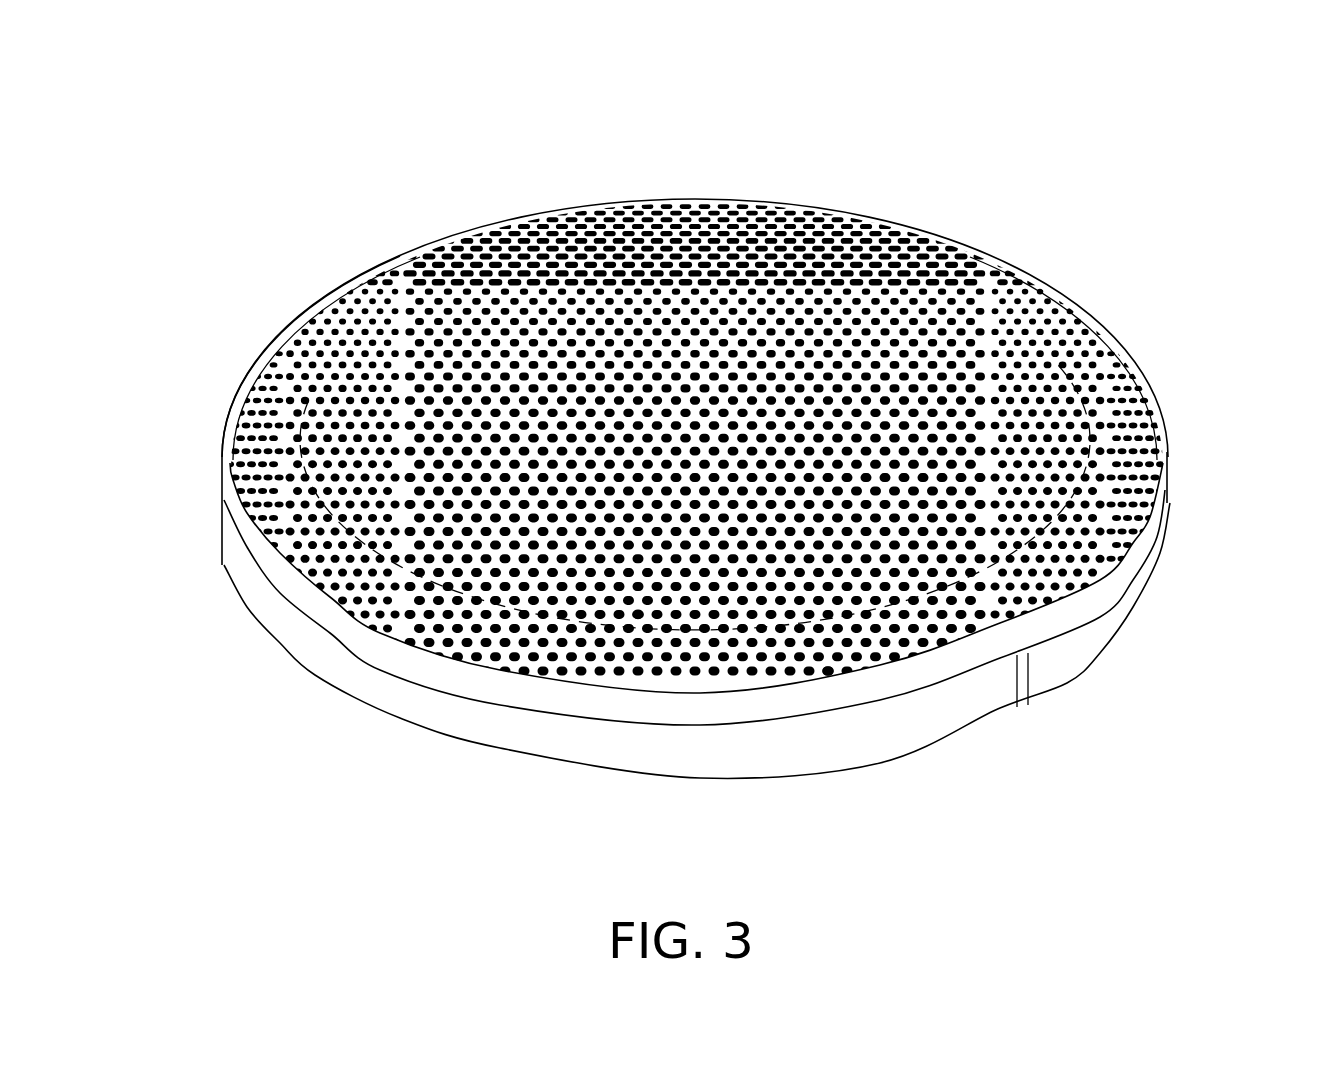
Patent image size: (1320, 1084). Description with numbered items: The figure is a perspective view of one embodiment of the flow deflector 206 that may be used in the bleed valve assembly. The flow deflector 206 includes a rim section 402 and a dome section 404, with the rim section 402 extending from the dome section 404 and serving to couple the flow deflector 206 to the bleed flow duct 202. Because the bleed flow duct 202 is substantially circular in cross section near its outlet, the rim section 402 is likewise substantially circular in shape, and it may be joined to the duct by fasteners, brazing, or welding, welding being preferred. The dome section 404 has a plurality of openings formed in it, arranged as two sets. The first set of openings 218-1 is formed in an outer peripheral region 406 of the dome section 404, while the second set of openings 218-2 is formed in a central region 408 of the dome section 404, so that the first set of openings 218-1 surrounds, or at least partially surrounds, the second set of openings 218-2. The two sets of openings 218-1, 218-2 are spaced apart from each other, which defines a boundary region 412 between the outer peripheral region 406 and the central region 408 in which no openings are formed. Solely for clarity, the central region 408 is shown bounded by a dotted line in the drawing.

The flow deflector 206 is at (985, 128).
The bleed flow duct 202 is at (712, 865).
The rim section 402 is at (1172, 503).
The dome section 404 is at (298, 458).
The outer peripheral region 406 is at (1128, 432).
The central region 408 is at (298, 402).
The boundary region 412 is at (1092, 398).
The first set of openings 218-1 is at (825, 679).
The second set of openings 218-2 is at (634, 620).